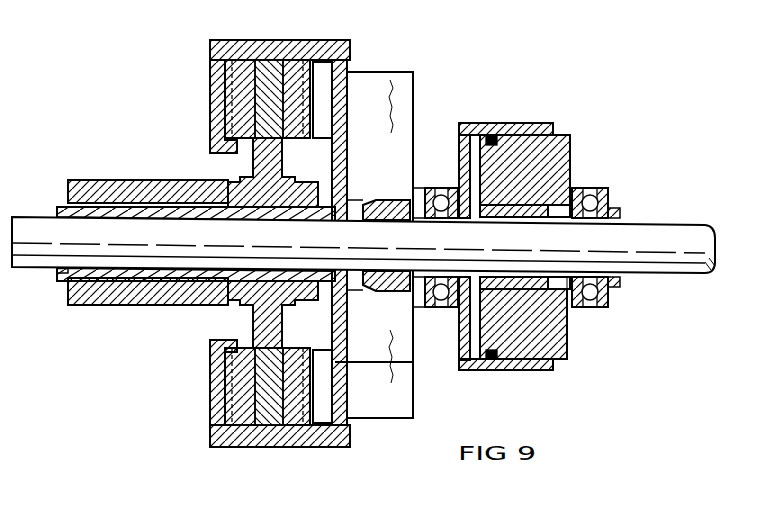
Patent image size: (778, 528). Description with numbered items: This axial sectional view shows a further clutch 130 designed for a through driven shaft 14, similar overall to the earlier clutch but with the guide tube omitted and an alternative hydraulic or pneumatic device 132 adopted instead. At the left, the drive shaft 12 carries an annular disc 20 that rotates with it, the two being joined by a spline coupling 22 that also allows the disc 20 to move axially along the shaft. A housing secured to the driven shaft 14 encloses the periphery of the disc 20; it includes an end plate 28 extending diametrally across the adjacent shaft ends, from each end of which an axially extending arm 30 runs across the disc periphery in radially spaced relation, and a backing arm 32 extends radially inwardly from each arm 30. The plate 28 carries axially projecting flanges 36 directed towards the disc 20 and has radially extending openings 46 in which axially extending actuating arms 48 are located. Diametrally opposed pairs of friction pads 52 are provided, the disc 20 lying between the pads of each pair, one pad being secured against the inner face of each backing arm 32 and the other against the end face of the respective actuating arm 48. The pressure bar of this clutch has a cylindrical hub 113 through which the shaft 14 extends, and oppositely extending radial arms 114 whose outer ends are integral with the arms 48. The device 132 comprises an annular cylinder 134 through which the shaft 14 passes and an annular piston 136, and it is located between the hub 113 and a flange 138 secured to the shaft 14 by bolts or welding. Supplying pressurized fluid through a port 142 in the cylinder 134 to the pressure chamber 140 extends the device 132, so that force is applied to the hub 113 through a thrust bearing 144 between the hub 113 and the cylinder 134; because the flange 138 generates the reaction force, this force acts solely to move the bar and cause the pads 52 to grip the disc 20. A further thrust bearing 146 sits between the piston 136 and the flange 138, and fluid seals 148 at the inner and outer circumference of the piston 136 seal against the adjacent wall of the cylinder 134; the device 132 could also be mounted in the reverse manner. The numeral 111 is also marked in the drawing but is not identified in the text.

The drive shaft 12 is at (135, 180).
The driven shaft 14 is at (42, 230).
The annular disc 20 is at (258, 447).
The spline coupling 22 is at (228, 300).
The end plate 28 is at (345, 328).
The axially extending arm 30 is at (272, 40).
The backing arm 32 is at (225, 78).
The axially projecting flange 36 is at (258, 164).
The opening 46 is at (335, 362).
The actuating arm 48 is at (333, 96).
The friction pad 52 is at (298, 58).
The sleeve retainer 111 is at (60, 272).
The cylindrical hub 113 is at (400, 175).
The radial arm 114 is at (392, 135).
The clutch 130 is at (168, 365).
The hydraulic or pneumatic device 132 is at (572, 128).
The annular cylinder 134 is at (527, 365).
The annular piston 136 is at (553, 156).
The flange 138 is at (615, 208).
The pressure chamber 140 is at (474, 123).
The port 142 is at (468, 370).
The thrust bearing 144 is at (432, 187).
The thrust bearing 146 is at (612, 298).
The fluid seal 148 is at (508, 130).